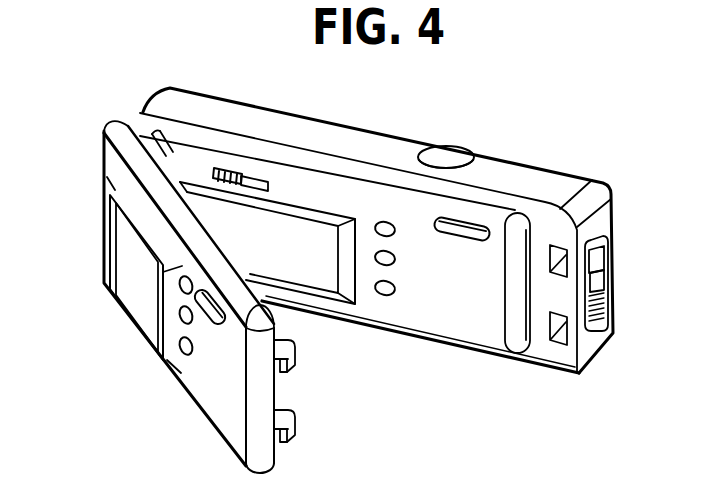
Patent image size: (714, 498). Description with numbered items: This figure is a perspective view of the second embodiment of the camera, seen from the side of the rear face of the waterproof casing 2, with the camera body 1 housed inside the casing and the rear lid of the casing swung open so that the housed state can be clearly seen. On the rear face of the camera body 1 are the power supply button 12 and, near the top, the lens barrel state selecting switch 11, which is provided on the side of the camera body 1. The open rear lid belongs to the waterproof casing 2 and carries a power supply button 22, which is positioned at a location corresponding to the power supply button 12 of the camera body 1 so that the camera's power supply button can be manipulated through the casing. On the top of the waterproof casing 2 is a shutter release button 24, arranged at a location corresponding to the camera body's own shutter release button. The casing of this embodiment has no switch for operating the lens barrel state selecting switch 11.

The camera body 1 is at (434, 321).
The waterproof casing 2 is at (160, 112).
The lens barrel state selecting switch 11 is at (233, 162).
The power supply button 12 is at (386, 213).
The power supply button 22 is at (183, 289).
The shutter release button 24 is at (455, 149).